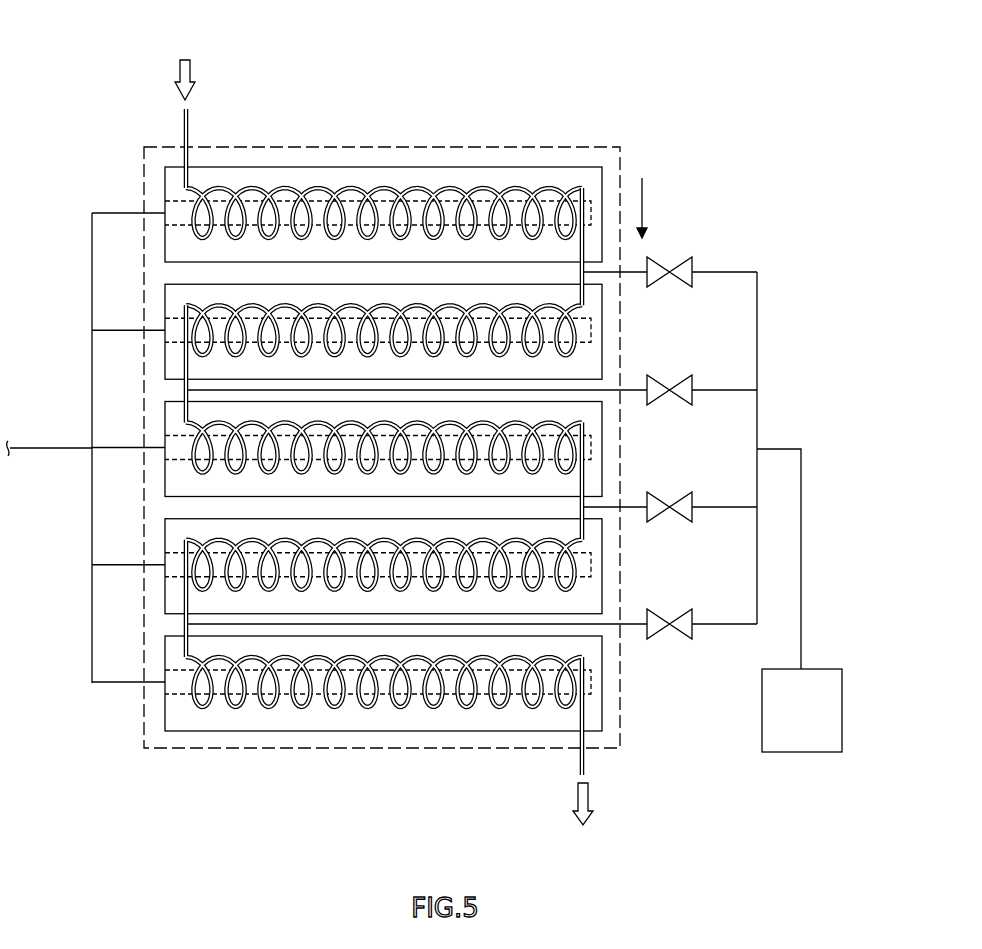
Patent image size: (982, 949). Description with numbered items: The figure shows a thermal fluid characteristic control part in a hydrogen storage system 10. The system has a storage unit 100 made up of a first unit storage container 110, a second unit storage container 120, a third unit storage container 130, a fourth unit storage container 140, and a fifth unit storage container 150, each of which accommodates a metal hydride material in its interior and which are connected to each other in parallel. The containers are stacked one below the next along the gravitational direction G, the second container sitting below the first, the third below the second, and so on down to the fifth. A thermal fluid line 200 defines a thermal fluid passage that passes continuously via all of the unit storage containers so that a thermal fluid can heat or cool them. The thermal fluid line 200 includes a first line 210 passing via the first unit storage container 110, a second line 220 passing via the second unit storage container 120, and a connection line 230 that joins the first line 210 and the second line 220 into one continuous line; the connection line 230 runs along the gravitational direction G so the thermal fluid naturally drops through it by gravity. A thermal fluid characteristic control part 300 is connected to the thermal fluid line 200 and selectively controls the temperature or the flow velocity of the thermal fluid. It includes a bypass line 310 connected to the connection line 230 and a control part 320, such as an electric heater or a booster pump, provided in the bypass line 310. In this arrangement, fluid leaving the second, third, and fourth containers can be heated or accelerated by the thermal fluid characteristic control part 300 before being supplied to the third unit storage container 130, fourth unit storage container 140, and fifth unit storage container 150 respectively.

The hydrogen storage system 10 is at (128, 9).
The storage unit 100 is at (143, 147).
The first unit storage container 110 is at (165, 180).
The second unit storage container 120 is at (166, 300).
The third unit storage container 130 is at (166, 417).
The fourth unit storage container 140 is at (166, 536).
The fifth unit storage container 150 is at (166, 653).
The thermal fluid line 200 is at (394, 437).
The first line 210 is at (381, 189).
The second line 220 is at (450, 306).
The connection line 230 is at (592, 237).
The thermal fluid characteristic control part 300 is at (554, 483).
The bypass line 310 is at (744, 271).
The control part 320 is at (842, 710).
The gravitational direction G is at (645, 205).